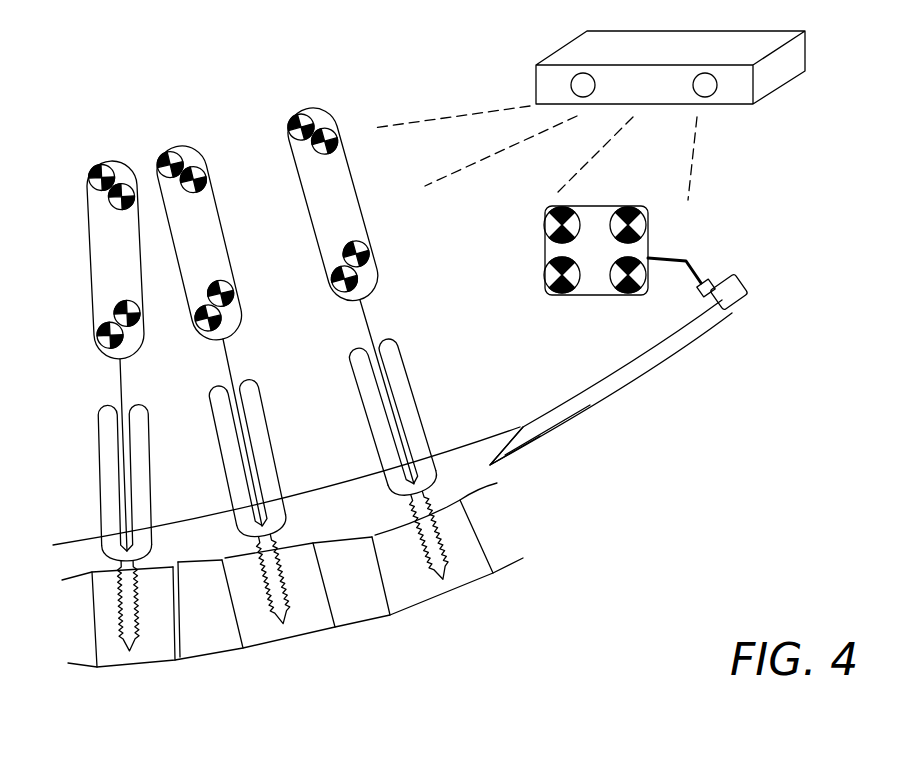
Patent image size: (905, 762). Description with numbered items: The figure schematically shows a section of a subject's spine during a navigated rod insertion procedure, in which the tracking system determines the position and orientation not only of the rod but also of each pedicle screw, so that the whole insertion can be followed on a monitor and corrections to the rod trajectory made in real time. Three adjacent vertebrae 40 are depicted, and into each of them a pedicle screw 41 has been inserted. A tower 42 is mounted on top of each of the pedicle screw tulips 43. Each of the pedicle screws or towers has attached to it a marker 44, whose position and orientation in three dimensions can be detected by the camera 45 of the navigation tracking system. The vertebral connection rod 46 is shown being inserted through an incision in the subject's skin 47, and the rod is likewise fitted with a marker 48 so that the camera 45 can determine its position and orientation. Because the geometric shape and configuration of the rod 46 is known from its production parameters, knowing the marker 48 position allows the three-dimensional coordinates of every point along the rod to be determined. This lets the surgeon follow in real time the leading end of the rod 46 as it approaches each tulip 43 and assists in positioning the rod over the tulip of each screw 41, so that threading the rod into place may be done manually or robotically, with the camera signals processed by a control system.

The vertebrae 40 is at (120, 675).
The pedicle screw 41 is at (145, 637).
The tower 42 is at (100, 470).
The pedicle screw tulip 43 is at (155, 557).
The marker 44 is at (90, 248).
The camera 45 is at (568, 44).
The vertebral connection rod 46 is at (672, 357).
The subject's skin 47 is at (493, 432).
The marker 48 is at (545, 247).